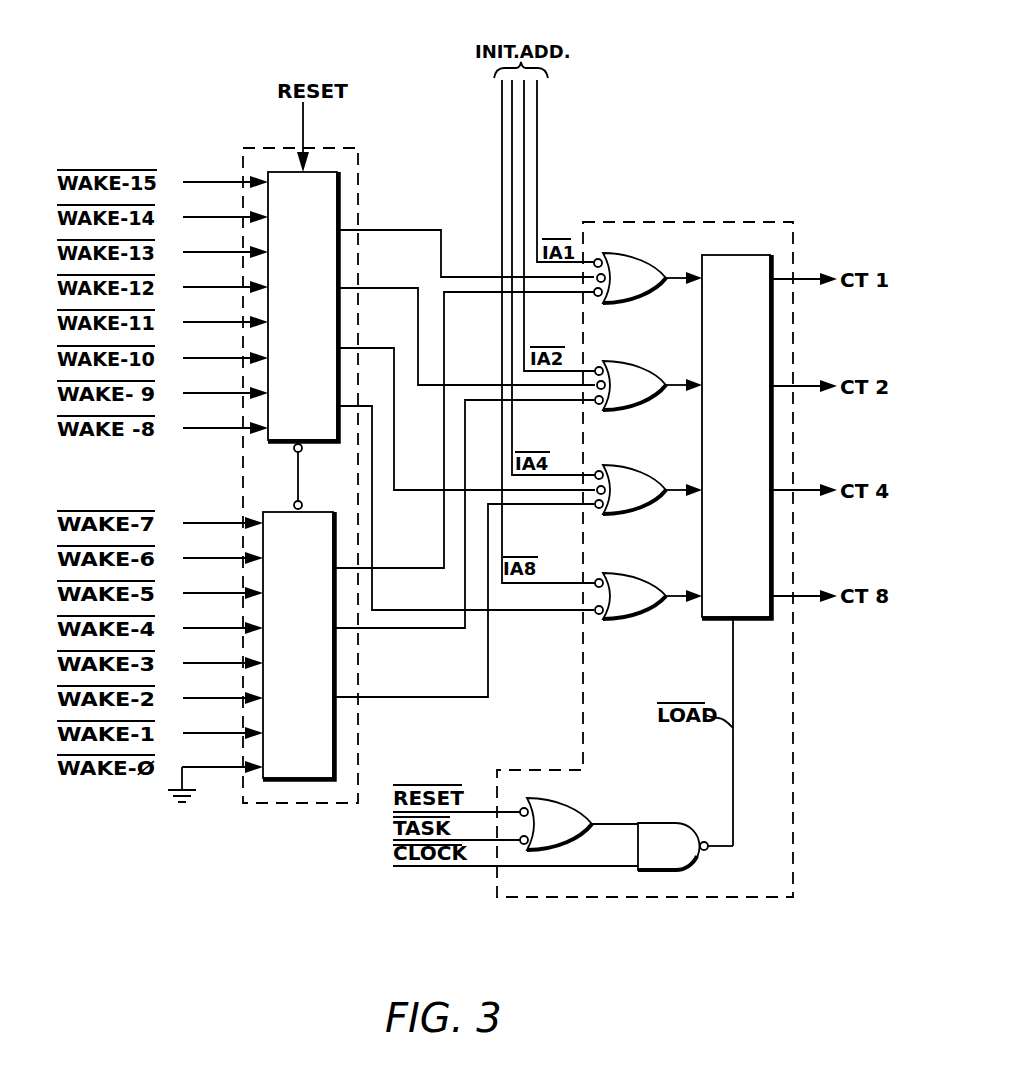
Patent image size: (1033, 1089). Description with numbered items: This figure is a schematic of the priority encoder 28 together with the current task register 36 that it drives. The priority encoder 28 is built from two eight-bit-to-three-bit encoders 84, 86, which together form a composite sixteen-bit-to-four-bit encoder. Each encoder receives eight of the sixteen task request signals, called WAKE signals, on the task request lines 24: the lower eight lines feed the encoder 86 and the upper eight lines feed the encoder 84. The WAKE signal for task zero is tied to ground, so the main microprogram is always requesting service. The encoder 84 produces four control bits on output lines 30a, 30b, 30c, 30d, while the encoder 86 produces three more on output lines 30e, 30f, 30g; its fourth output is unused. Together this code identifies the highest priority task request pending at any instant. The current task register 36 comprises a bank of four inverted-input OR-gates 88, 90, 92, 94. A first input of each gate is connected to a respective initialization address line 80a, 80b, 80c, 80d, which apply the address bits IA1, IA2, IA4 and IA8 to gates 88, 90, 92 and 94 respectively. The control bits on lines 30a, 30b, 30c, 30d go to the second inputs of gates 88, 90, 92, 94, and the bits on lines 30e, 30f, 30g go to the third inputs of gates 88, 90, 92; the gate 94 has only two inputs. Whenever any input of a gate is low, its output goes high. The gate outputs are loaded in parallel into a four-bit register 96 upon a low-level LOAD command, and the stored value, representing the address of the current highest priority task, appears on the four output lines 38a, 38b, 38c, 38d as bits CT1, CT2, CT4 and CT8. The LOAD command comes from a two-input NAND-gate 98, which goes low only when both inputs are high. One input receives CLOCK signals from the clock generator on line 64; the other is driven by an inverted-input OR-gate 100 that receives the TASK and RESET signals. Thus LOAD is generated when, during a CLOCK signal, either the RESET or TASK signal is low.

The task request signal lines 24 is at (193, 182).
The priority encoder 28 is at (267, 806).
The encoder 84 is at (338, 203).
The encoder 86 is at (322, 781).
The output line 30a is at (400, 229).
The output line 30b is at (395, 287).
The output line 30c is at (386, 346).
The output line 30d is at (376, 442).
The output line 30e is at (394, 567).
The output line 30f is at (394, 627).
The output line 30g is at (395, 696).
The initialization address line 80a is at (537, 162).
The initialization address line 80b is at (530, 125).
The initialization address line 80c is at (512, 172).
The initialization address line 80d is at (502, 130).
The inverted-input OR-gate 88 is at (650, 268).
The inverted-input OR-gate 90 is at (648, 371).
The inverted-input OR-gate 92 is at (648, 473).
The inverted-input OR-gate 94 is at (646, 578).
The four-bit register 96 is at (723, 255).
The current task register 36 is at (796, 762).
The output line 38a is at (800, 279).
The output line 38b is at (800, 386).
The output line 38c is at (800, 490).
The output line 38d is at (800, 596).
The inverted-input OR-gate 100 is at (576, 812).
The NAND-gate 98 is at (665, 871).
The clock line 64 is at (440, 867).